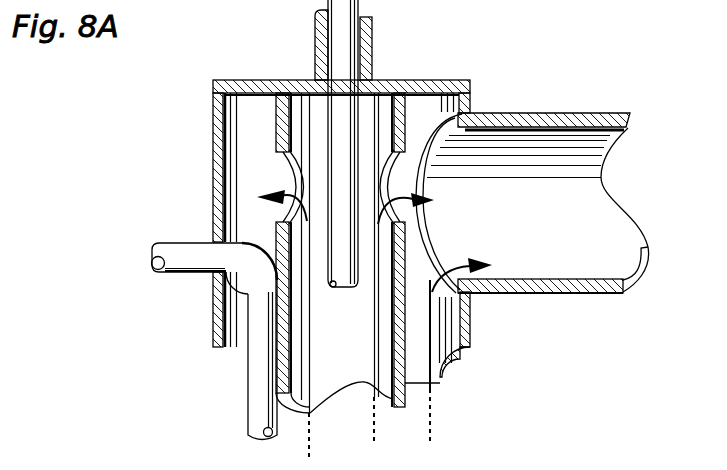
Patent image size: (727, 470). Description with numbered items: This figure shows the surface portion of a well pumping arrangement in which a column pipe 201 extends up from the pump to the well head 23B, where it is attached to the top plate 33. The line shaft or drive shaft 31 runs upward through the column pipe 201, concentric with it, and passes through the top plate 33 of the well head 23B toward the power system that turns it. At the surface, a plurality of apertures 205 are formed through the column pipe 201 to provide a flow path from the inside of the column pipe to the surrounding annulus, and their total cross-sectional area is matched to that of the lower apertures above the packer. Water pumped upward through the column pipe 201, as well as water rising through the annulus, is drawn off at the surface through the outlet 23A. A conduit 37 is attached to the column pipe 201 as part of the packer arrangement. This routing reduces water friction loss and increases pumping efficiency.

The drive shaft 31 is at (305, 0).
The top plate 33 is at (422, 85).
The outlet 23A is at (557, 114).
The well head 23B is at (213, 203).
The column pipe 201 is at (283, 111).
The apertures 205 is at (287, 162).
The conduit 37 is at (247, 370).